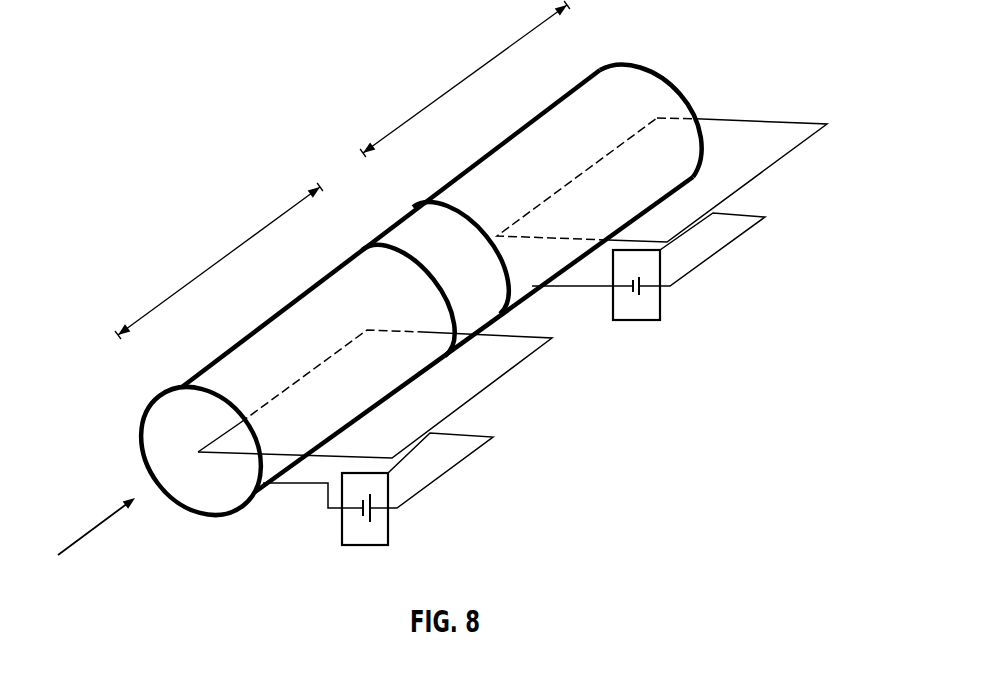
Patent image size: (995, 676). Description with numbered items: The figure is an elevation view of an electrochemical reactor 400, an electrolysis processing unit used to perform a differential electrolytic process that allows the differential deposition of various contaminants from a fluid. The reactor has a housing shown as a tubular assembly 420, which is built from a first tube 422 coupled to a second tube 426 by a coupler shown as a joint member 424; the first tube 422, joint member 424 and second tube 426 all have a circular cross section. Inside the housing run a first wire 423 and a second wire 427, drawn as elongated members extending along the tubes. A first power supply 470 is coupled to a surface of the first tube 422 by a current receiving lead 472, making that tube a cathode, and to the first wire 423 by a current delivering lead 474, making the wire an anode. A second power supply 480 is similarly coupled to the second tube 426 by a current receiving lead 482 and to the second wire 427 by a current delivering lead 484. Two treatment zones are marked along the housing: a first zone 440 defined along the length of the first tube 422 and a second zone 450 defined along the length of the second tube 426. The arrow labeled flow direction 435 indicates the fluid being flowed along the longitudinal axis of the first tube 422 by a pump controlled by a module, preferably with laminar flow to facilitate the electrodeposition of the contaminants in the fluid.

The electrochemical reactor 400 is at (263, 118).
The tubular assembly 420 is at (390, 216).
The first tube 422 is at (345, 277).
The first wire 423 is at (502, 378).
The joint member 424 is at (473, 277).
The second tube 426 is at (582, 98).
The second wire 427 is at (747, 187).
The flow direction 435 is at (100, 528).
The first zone 440 is at (219, 261).
The second zone 450 is at (465, 79).
The first power supply 470 is at (363, 545).
The current receiving lead 472 is at (327, 508).
The current delivering lead 474 is at (448, 472).
The second power supply 480 is at (635, 322).
The current receiving lead 482 is at (607, 287).
The current delivering lead 484 is at (720, 250).